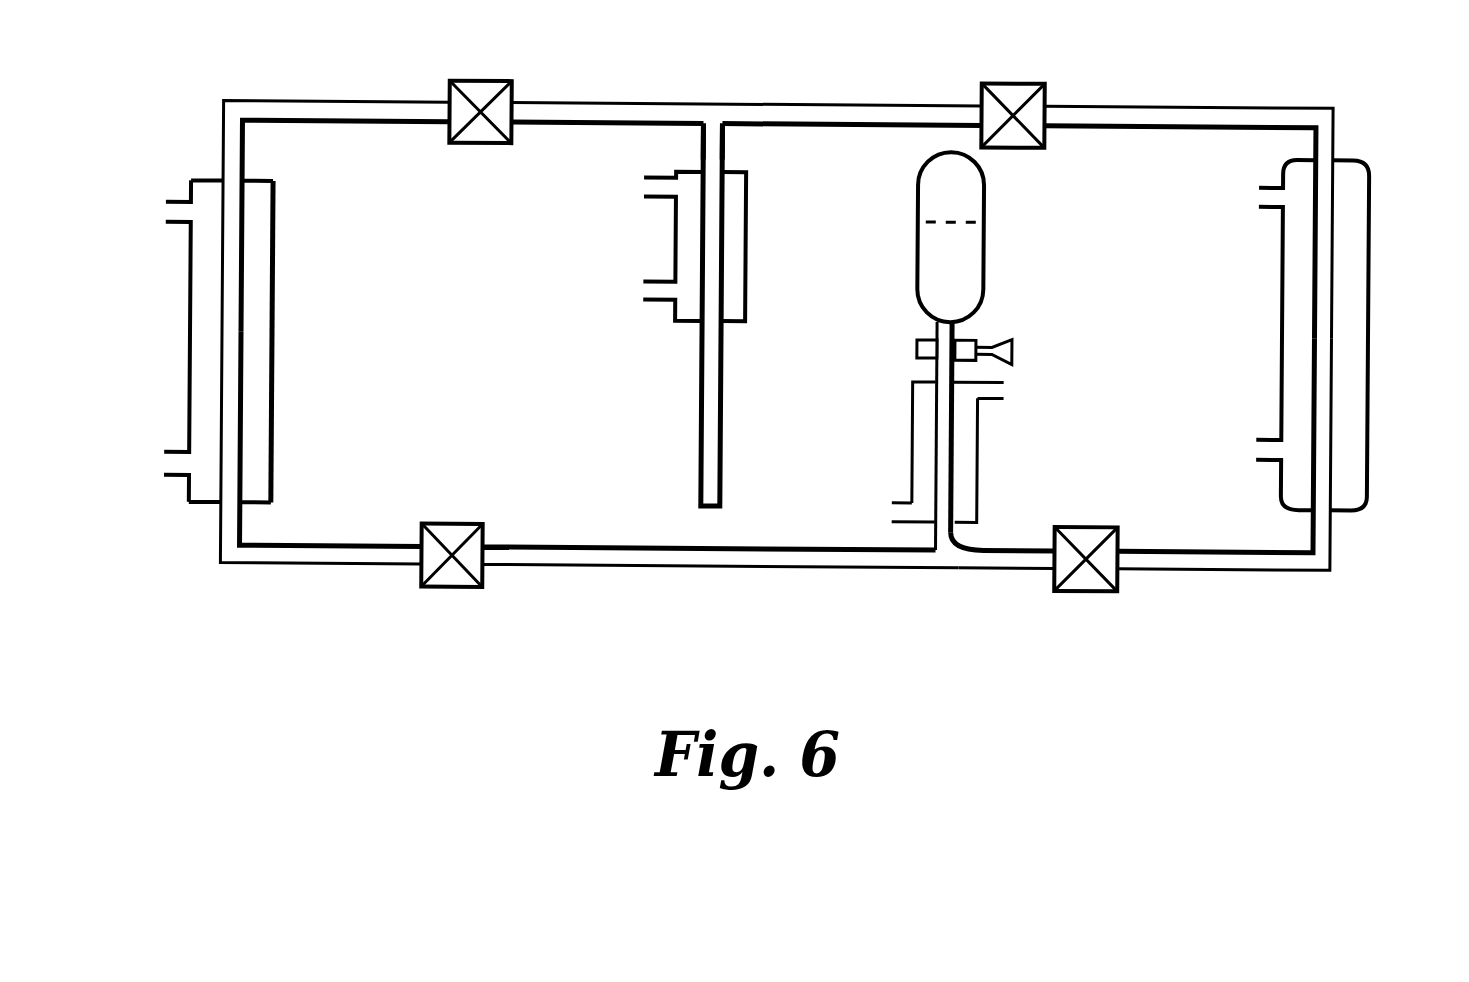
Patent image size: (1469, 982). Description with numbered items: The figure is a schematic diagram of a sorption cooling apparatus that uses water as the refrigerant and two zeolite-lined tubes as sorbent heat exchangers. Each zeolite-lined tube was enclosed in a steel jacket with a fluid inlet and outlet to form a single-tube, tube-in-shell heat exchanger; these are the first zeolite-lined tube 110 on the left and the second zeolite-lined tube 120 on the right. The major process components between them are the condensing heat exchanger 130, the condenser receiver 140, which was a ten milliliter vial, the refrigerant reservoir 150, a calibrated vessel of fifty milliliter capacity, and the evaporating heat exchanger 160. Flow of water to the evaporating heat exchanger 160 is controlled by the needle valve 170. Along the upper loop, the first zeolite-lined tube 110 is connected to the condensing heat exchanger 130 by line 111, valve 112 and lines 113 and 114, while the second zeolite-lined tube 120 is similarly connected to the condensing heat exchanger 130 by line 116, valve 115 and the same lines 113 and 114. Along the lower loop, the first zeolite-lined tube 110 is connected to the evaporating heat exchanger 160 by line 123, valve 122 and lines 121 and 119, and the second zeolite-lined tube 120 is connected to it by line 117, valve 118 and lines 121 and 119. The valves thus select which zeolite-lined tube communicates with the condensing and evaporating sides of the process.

The first zeolite-lined tube 110 is at (222, 319).
The line 111 is at (347, 103).
The valve 112 is at (481, 83).
The line 113 is at (665, 105).
The line 114 is at (727, 142).
The valve 115 is at (1033, 146).
The line 116 is at (1333, 139).
The line 117 is at (1255, 570).
The valve 118 is at (1092, 590).
The line 119 is at (953, 535).
The second zeolite-lined tube 120 is at (1337, 321).
The line 121 is at (577, 568).
The valve 122 is at (455, 526).
The line 123 is at (314, 567).
The condensing heat exchanger 130 is at (740, 323).
The condenser receiver 140 is at (721, 443).
The refrigerant reservoir 150 is at (985, 201).
The evaporating heat exchanger 160 is at (978, 456).
The needle valve 170 is at (1013, 347).